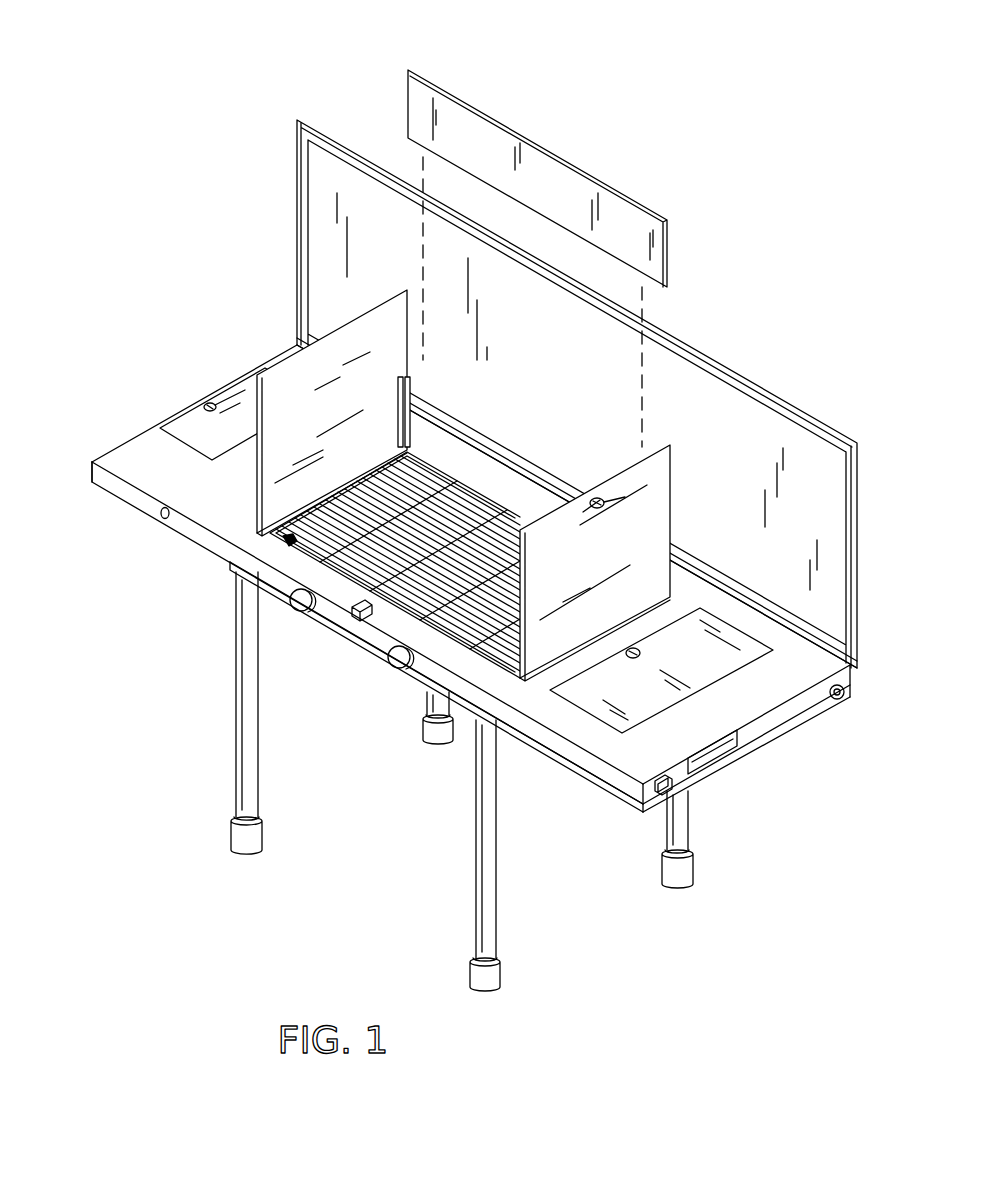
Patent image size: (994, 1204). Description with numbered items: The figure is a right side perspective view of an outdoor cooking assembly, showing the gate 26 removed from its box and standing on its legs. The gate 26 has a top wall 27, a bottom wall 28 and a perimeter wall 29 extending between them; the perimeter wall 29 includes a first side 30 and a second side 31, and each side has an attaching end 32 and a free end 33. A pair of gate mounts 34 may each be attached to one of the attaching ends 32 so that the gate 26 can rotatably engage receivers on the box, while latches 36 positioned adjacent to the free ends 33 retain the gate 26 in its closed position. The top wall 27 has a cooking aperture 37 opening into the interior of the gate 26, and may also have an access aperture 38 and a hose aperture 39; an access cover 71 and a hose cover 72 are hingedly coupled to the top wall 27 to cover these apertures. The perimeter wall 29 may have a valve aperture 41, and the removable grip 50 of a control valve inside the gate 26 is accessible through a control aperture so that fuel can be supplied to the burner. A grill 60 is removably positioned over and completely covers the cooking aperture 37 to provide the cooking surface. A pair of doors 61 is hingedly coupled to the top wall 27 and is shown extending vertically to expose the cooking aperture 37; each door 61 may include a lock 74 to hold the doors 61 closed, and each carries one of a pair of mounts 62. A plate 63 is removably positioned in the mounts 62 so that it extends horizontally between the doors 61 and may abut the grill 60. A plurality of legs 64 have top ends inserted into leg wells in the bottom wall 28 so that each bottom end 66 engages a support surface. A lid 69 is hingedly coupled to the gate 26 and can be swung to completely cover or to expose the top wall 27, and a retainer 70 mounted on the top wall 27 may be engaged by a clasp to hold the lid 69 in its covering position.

The gate 26 is at (92, 484).
The top wall 27 is at (159, 456).
The bottom wall 28 is at (777, 745).
The perimeter wall 29 is at (542, 750).
The first side 30 is at (789, 718).
The second side 31 is at (196, 400).
The attaching end 32 is at (845, 699).
The free end 33 is at (92, 460).
The gate mount 34 is at (818, 712).
The latch 36 is at (660, 795).
The cooking aperture 37 is at (278, 545).
The access aperture 38 is at (760, 742).
The hose aperture 39 is at (232, 398).
The valve aperture 41 is at (165, 519).
The removable grip 50 is at (301, 613).
The grill 60 is at (378, 672).
The door 61 is at (298, 352).
The mount 62 is at (402, 378).
The plate 63 is at (510, 128).
The leg 64 is at (234, 742).
The bottom end 66 is at (230, 822).
The lid 69 is at (813, 418).
The retainer 70 is at (355, 616).
The access cover 71 is at (585, 713).
The hose cover 72 is at (182, 440).
The lock 74 is at (604, 503).